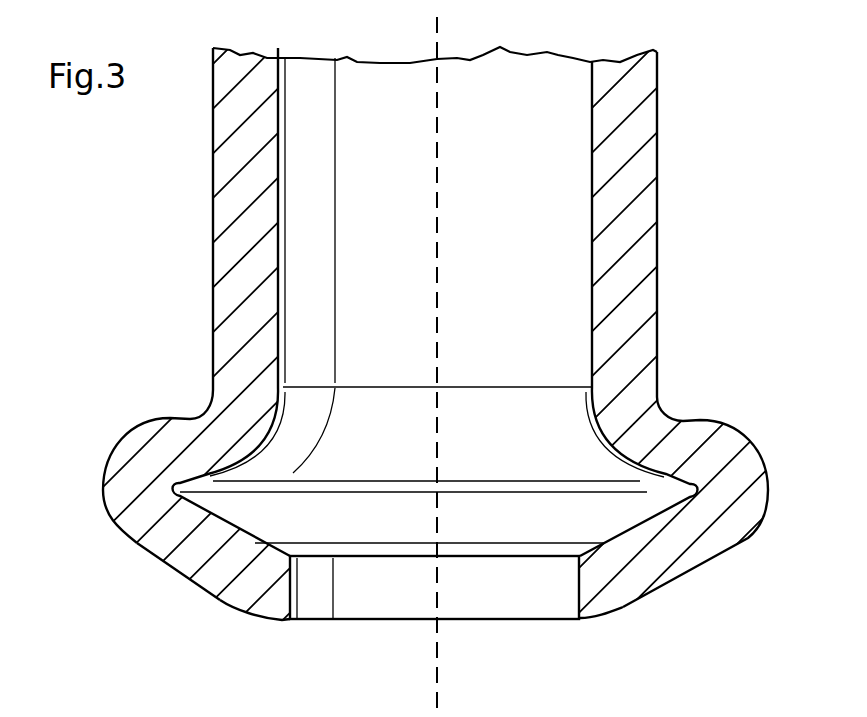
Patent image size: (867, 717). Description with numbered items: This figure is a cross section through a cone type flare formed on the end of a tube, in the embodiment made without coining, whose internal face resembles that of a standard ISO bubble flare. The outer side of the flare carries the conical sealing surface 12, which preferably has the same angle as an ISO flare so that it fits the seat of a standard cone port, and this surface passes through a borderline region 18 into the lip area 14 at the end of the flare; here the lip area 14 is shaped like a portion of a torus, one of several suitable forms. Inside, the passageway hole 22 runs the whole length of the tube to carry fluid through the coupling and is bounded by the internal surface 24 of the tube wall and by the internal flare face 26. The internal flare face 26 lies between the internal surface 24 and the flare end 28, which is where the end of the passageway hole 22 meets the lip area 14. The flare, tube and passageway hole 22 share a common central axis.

The sealing surface 12 is at (138, 543).
The lip area 14 is at (258, 612).
The borderline region 18 is at (223, 603).
The passageway hole 22 is at (499, 210).
The internal surface 24 is at (588, 175).
The internal flare face 26 is at (686, 495).
The flare end 28 is at (580, 621).